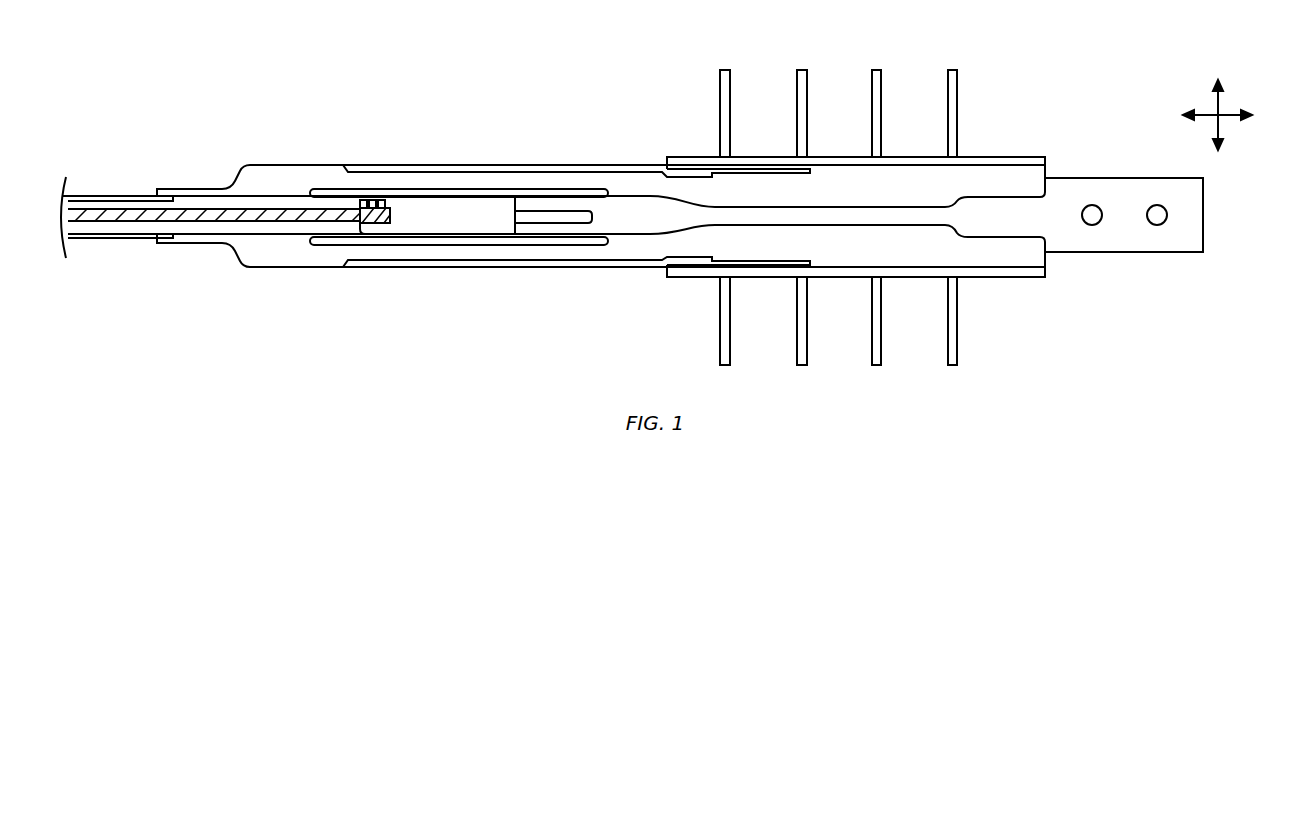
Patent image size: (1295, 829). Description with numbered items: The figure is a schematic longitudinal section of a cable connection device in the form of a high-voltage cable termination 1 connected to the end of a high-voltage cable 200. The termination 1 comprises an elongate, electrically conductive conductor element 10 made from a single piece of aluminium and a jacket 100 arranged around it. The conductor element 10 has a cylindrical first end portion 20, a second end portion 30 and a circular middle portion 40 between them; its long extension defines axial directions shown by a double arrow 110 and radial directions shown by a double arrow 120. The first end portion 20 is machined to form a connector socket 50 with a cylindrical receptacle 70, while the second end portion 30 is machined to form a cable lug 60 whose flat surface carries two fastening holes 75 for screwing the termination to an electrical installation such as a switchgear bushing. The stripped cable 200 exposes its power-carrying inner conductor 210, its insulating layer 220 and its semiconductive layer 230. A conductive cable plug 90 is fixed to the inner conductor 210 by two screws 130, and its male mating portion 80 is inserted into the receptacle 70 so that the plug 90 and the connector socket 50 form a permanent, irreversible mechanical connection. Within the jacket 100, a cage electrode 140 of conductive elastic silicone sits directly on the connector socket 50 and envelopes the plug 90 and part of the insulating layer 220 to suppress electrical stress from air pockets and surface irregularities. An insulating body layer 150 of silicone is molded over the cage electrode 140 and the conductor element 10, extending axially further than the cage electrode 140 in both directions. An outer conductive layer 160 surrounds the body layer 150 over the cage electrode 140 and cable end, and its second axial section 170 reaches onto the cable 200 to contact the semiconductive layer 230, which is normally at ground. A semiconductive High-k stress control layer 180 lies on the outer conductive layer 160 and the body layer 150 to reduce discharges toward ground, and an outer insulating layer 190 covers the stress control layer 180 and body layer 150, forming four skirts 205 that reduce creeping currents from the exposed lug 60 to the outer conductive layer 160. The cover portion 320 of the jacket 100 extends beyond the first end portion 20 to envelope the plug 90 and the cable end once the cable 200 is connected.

The cable termination 1 is at (257, 42).
The conductor element 10 is at (900, 190).
The first end portion 20 is at (652, 198).
The second end portion 30 is at (998, 210).
The middle portion 40 is at (825, 213).
The connector socket 50 is at (568, 230).
The cable lug 60 is at (1120, 190).
The cylindrical receptacle 70 is at (528, 224).
The fastening holes 75 is at (1092, 215).
The male mating portion 80 is at (547, 211).
The cable plug 90 is at (465, 210).
The jacket 100 is at (598, 158).
The double arrow (axial directions) 110 is at (1228, 110).
The double arrow (radial directions) 120 is at (1215, 100).
The screws 130 is at (385, 199).
The cage electrode 140 is at (328, 189).
The insulating body layer 150 is at (283, 186).
The outer conductive layer 160 is at (250, 163).
The second axial section 170 is at (200, 187).
The stress control layer 180 is at (757, 168).
The outer insulating layer 190 is at (848, 160).
The high-voltage cable 200 is at (110, 193).
The skirts 205 is at (875, 342).
The inner conductor 210 is at (125, 223).
The insulating layer 220 is at (142, 200).
The semiconductive layer 230 is at (85, 194).
The cover portion 320 is at (357, 300).